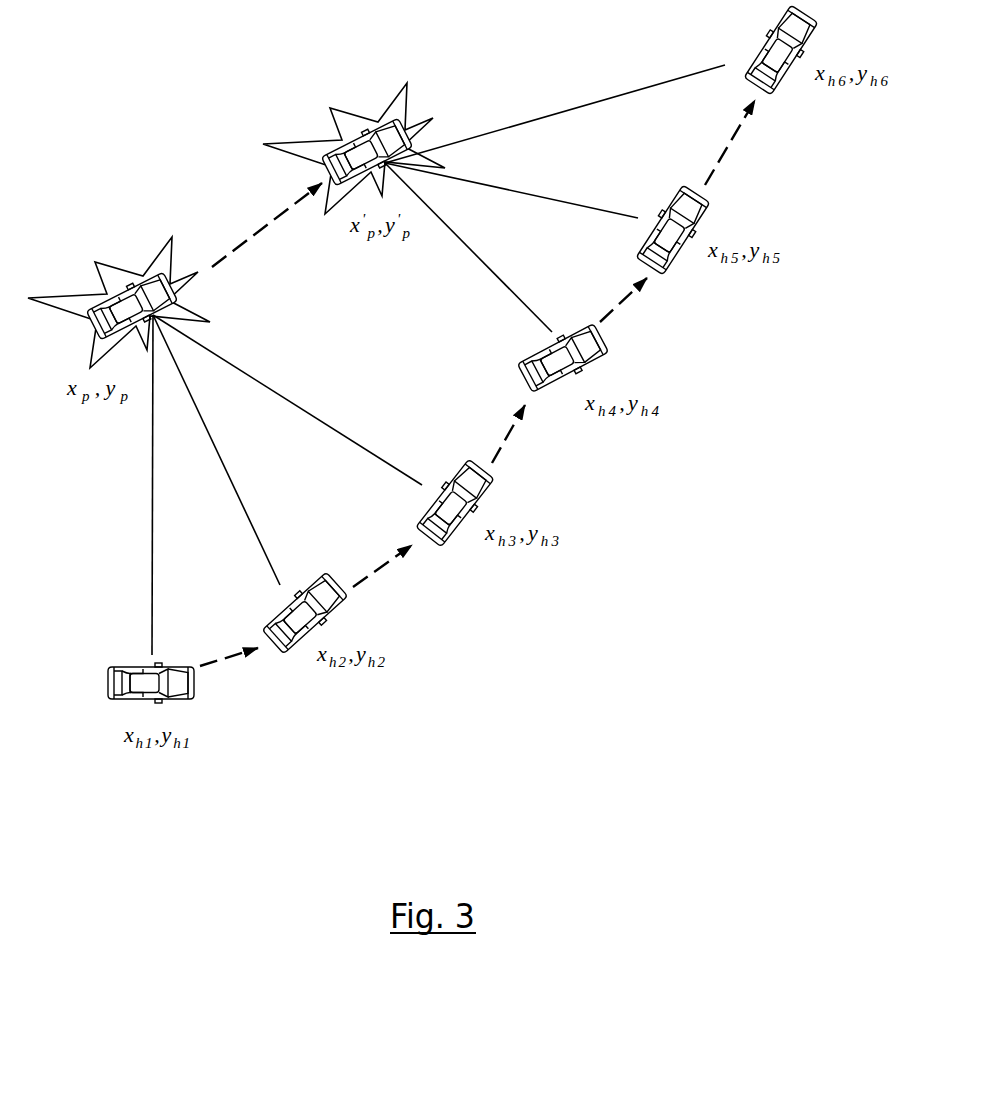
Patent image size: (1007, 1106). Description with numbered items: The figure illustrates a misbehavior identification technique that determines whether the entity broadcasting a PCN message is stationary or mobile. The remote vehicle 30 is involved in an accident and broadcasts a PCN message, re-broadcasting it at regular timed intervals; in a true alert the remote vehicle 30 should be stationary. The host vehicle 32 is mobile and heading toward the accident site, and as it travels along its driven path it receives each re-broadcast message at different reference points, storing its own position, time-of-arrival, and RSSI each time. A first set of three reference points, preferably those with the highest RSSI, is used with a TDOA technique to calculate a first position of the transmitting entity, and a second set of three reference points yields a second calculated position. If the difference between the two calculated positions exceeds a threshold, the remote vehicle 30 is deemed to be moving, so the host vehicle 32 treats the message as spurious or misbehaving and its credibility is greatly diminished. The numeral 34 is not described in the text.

The remote vehicle 30 is at (143, 274).
The host vehicle 32 is at (187, 700).
The host vehicle trajectory 34 is at (382, 576).